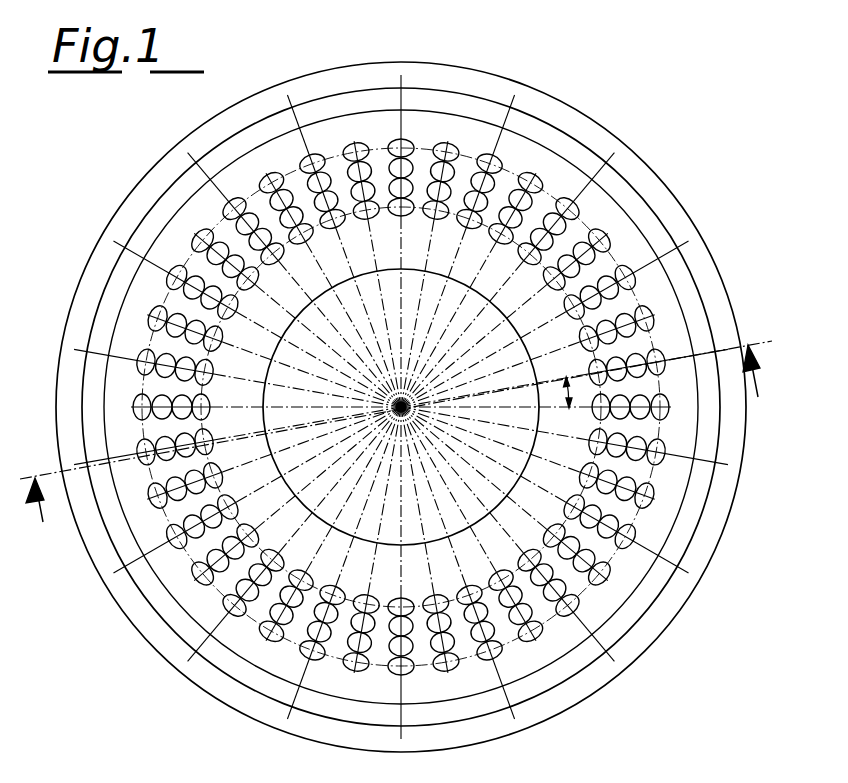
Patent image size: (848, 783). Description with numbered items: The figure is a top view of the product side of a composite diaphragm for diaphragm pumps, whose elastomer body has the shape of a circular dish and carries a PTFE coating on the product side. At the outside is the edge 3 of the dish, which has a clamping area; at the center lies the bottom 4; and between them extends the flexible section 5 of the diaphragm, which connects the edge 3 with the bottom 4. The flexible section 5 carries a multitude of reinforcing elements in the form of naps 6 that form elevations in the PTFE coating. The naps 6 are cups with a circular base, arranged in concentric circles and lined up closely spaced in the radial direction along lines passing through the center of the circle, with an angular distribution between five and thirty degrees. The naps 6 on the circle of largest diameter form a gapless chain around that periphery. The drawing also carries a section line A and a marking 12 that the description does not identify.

The edge of the dish 3 is at (658, 622).
The bottom 4 is at (522, 408).
The flexible section of the diaphragm 5 is at (530, 160).
The naps 6 is at (607, 240).
The outer wall of housing 12 is at (600, 689).
The section line A- A is at (396, 411).